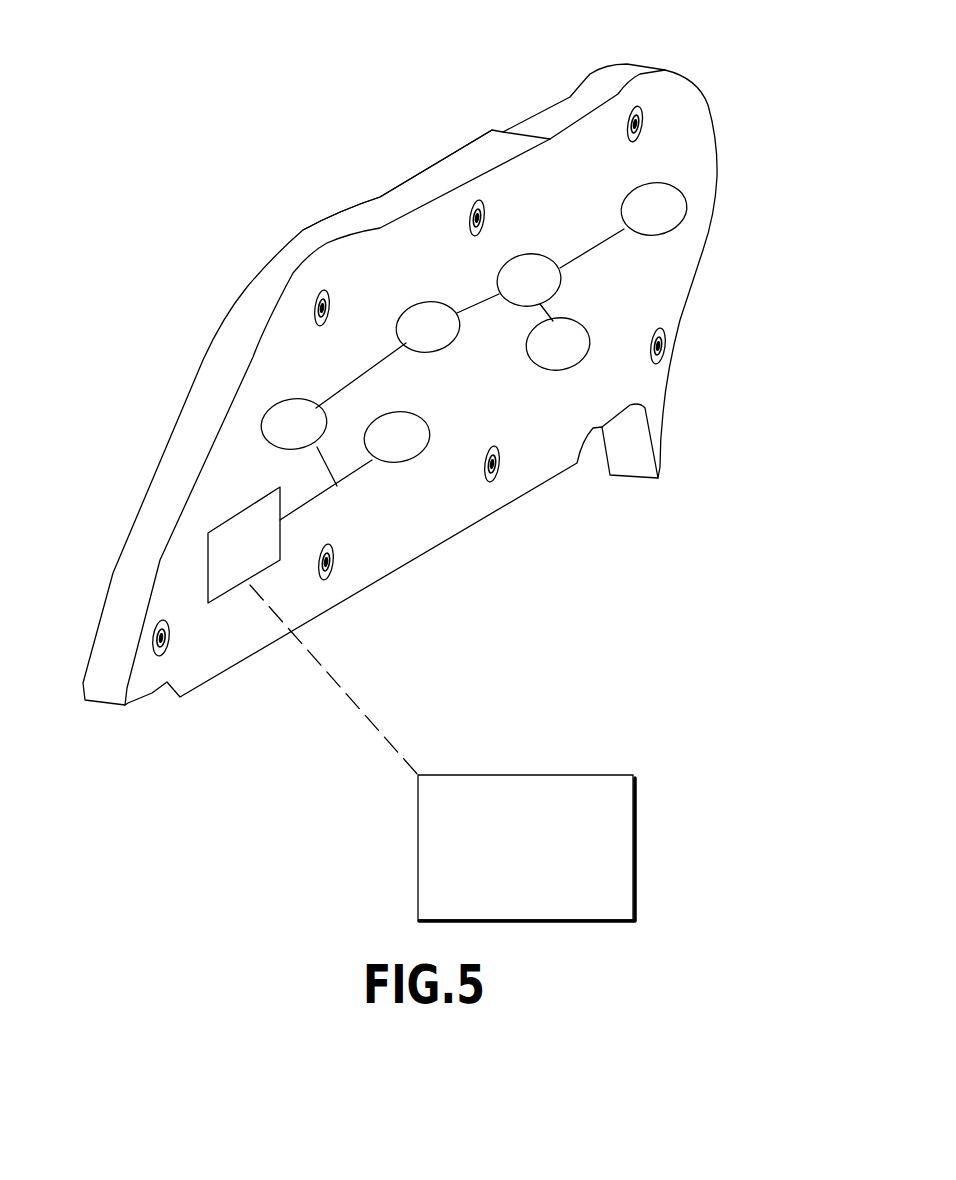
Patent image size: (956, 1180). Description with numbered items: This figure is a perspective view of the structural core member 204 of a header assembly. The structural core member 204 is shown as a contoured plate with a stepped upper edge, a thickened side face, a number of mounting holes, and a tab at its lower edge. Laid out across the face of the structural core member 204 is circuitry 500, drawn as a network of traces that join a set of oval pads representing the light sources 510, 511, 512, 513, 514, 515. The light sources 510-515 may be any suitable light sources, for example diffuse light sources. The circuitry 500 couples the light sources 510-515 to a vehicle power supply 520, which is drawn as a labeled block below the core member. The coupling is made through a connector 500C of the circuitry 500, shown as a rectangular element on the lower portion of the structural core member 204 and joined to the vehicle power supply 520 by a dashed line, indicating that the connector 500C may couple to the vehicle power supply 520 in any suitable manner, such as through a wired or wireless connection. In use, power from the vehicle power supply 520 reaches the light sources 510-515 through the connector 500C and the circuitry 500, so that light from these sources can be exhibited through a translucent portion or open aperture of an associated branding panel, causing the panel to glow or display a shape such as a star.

The structural core member 204 is at (413, 177).
The circuitry 500 is at (648, 293).
The connector 500C is at (232, 575).
The light source 510 is at (540, 253).
The light source 511 is at (680, 190).
The light source 512 is at (590, 362).
The light source 513 is at (407, 462).
The light source 514 is at (265, 403).
The light source 515 is at (400, 307).
The vehicle power supply 520 is at (418, 823).